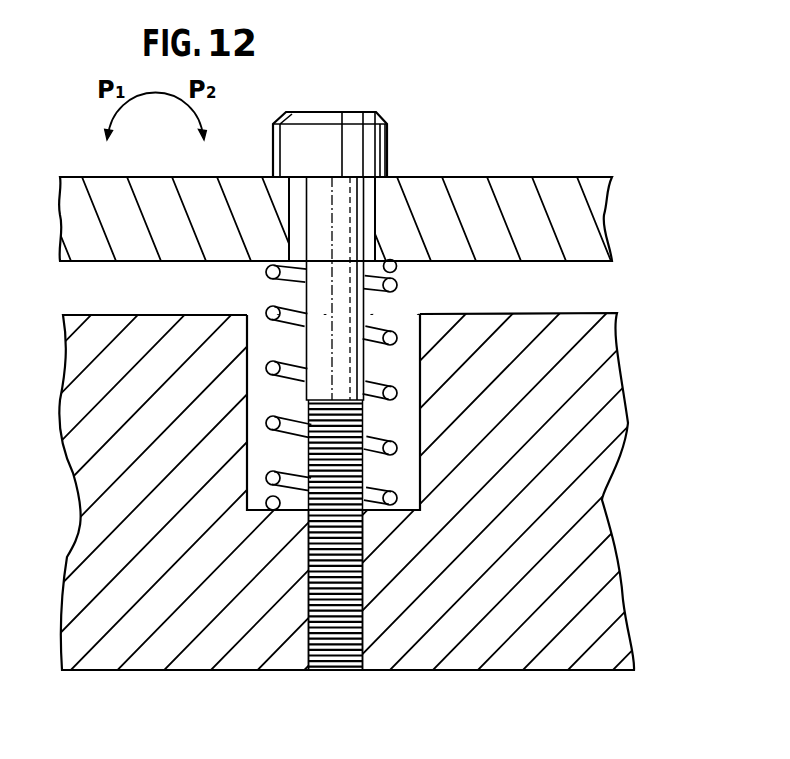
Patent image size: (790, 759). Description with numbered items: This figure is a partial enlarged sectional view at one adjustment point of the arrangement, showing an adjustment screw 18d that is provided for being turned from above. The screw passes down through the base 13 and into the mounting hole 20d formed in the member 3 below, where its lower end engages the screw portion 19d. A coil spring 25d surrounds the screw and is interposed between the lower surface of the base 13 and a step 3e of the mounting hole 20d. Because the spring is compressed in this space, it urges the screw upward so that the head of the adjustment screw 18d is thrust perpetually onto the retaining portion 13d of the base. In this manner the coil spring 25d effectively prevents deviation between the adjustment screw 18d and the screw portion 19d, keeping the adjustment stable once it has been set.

The base 13 is at (537, 190).
The retaining portion 13d is at (385, 188).
The body block 3 is at (616, 445).
The mounting hole 20d is at (250, 352).
The step 3e is at (262, 512).
The coil spring 25d is at (267, 274).
The adjustment screw 18d is at (329, 135).
The screw portion 19d is at (310, 638).